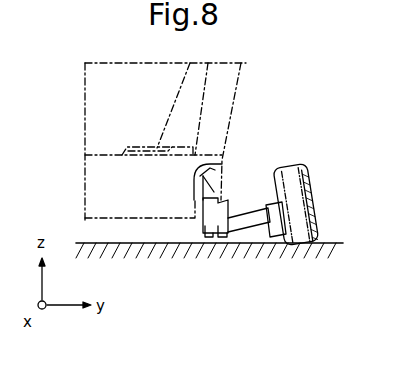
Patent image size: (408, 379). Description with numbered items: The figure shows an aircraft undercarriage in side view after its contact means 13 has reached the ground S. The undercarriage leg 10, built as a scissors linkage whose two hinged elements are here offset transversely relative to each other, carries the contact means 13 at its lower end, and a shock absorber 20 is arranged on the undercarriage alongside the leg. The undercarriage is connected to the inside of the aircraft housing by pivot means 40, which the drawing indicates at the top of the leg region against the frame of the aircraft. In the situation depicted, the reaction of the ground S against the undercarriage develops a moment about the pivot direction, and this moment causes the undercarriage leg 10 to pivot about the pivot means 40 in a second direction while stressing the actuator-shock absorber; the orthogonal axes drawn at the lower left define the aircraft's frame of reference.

The undercarriage leg 10 is at (198, 228).
The shock absorber 20 is at (227, 183).
The contact means 13 is at (312, 182).
The pivot means 40 is at (197, 183).
The ground S is at (332, 242).